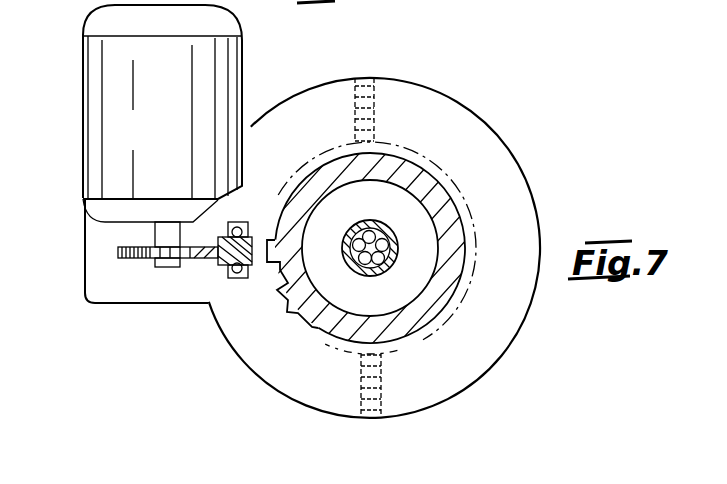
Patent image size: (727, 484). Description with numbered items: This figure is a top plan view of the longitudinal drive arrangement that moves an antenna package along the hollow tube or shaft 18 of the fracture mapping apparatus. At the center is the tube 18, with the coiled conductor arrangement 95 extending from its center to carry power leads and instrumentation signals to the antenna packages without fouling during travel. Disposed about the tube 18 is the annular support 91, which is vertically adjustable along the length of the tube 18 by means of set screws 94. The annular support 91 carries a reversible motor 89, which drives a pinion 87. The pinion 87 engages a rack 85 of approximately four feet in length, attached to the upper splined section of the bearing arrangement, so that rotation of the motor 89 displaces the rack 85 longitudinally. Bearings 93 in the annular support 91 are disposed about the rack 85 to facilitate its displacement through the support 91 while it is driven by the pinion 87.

The hollow tube or shaft 18 is at (318, 204).
The rack 85 is at (244, 266).
The pinion 87 is at (130, 263).
The reversible motor 89 is at (97, 119).
The annular support 91 is at (522, 166).
The bearings 93 is at (240, 224).
The set screws 94 is at (372, 78).
The conductor arrangement 95 is at (384, 236).